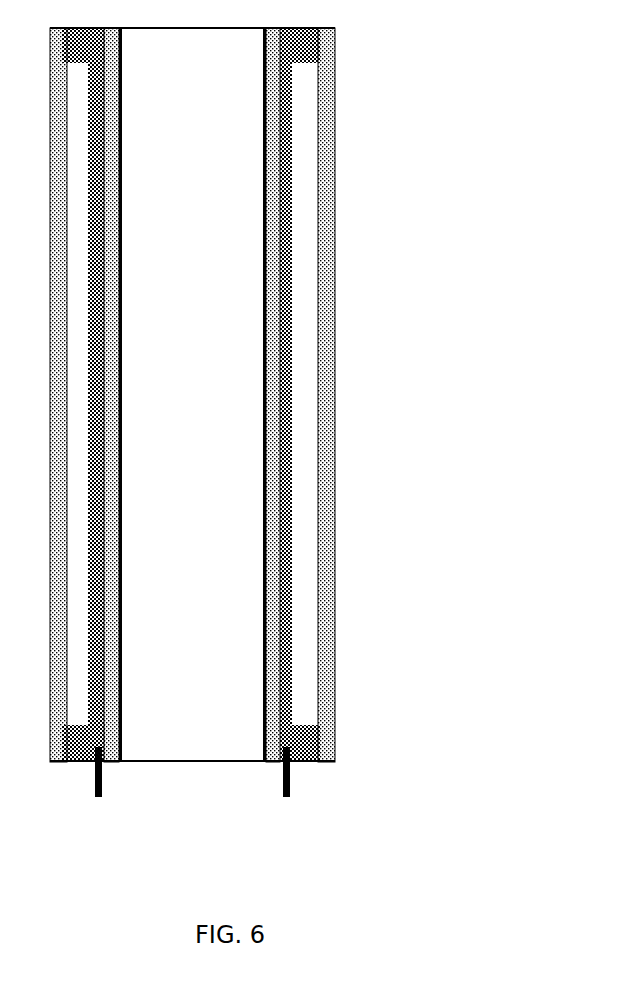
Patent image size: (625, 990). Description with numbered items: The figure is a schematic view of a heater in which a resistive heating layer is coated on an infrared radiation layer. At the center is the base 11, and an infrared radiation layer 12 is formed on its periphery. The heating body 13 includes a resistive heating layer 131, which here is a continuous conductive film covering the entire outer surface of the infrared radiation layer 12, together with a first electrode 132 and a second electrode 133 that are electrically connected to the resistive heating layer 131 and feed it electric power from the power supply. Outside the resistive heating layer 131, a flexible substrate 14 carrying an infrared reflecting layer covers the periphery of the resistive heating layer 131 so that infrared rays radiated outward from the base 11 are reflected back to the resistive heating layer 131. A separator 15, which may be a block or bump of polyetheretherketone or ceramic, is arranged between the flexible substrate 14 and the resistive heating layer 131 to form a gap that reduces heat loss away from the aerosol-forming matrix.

The base 11 is at (250, 103).
The infrared radiation layer 12 is at (273, 188).
The heating body 13 is at (292, 855).
The resistive heating layer 131 is at (273, 700).
The first electrode 132 is at (291, 785).
The second electrode 133 is at (103, 785).
The flexible substrate 14 is at (333, 455).
The separator 15 is at (307, 45).